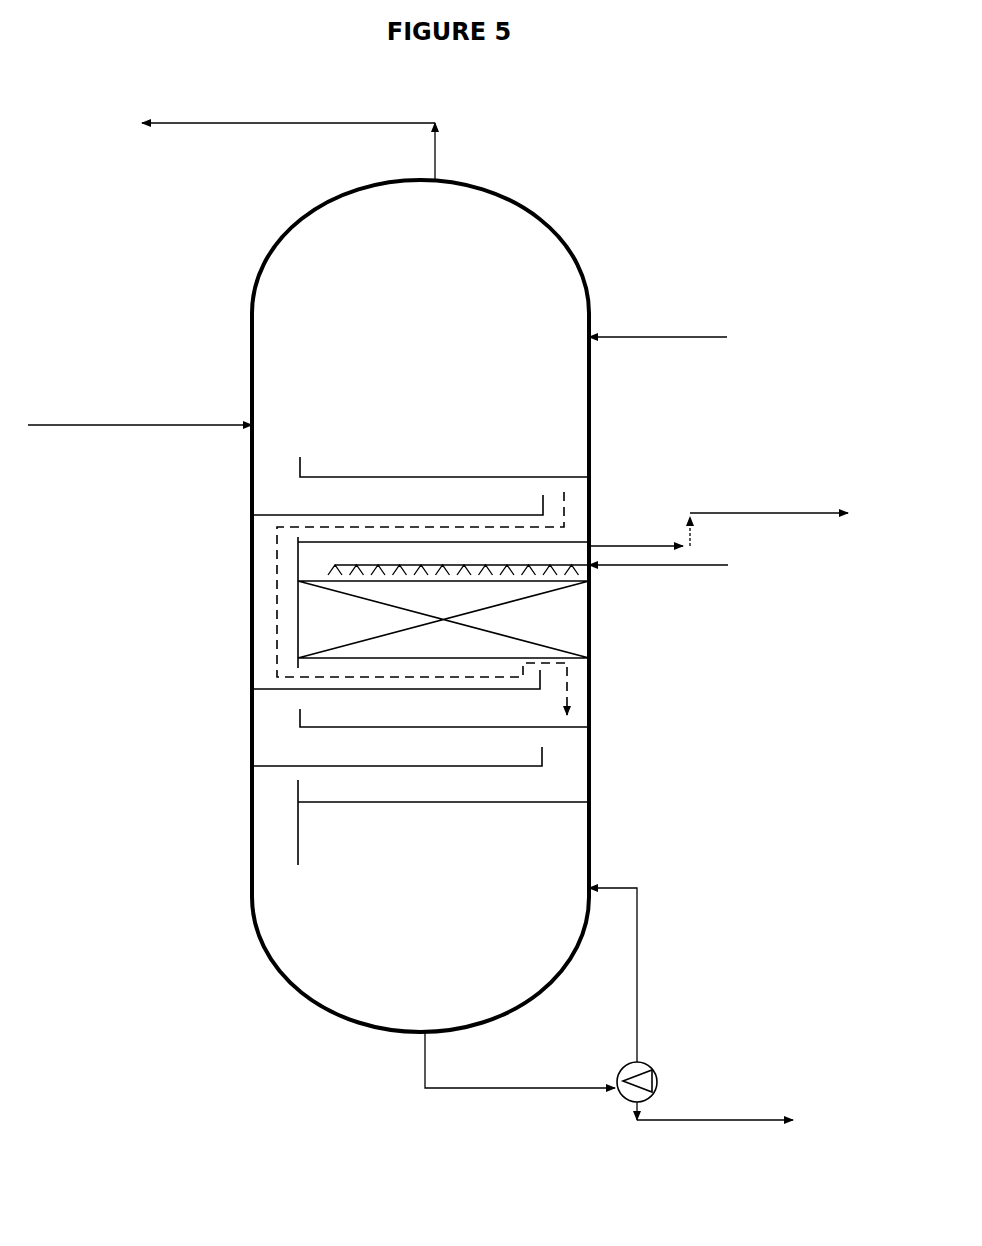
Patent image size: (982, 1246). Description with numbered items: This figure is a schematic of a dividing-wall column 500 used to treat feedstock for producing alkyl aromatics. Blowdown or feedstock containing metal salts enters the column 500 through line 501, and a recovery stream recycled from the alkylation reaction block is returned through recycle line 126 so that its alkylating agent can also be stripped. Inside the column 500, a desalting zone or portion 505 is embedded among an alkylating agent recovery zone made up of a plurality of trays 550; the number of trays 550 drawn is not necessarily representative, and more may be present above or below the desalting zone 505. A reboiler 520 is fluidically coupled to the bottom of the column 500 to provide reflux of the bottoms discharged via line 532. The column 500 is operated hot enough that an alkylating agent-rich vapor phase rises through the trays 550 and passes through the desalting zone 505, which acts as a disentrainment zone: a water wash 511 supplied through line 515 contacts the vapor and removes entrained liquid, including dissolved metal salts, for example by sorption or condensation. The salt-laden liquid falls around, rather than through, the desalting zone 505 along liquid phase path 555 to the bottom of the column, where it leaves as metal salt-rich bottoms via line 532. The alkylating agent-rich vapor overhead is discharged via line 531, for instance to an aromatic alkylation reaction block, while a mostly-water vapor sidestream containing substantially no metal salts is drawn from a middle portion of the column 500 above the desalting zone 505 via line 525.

The dividing-wall column 500 is at (585, 170).
The desalting zone or portion 505 is at (572, 621).
The water wash 511 is at (560, 560).
The line 515 is at (664, 556).
The reboiler 520 is at (648, 1078).
The line 525 is at (718, 521).
The line 531 is at (288, 143).
The line 532 is at (715, 1111).
The trays 550 is at (537, 472).
The liquid phase path 555 is at (272, 605).
The line 501 is at (140, 413).
The recycle line 126 is at (658, 327).